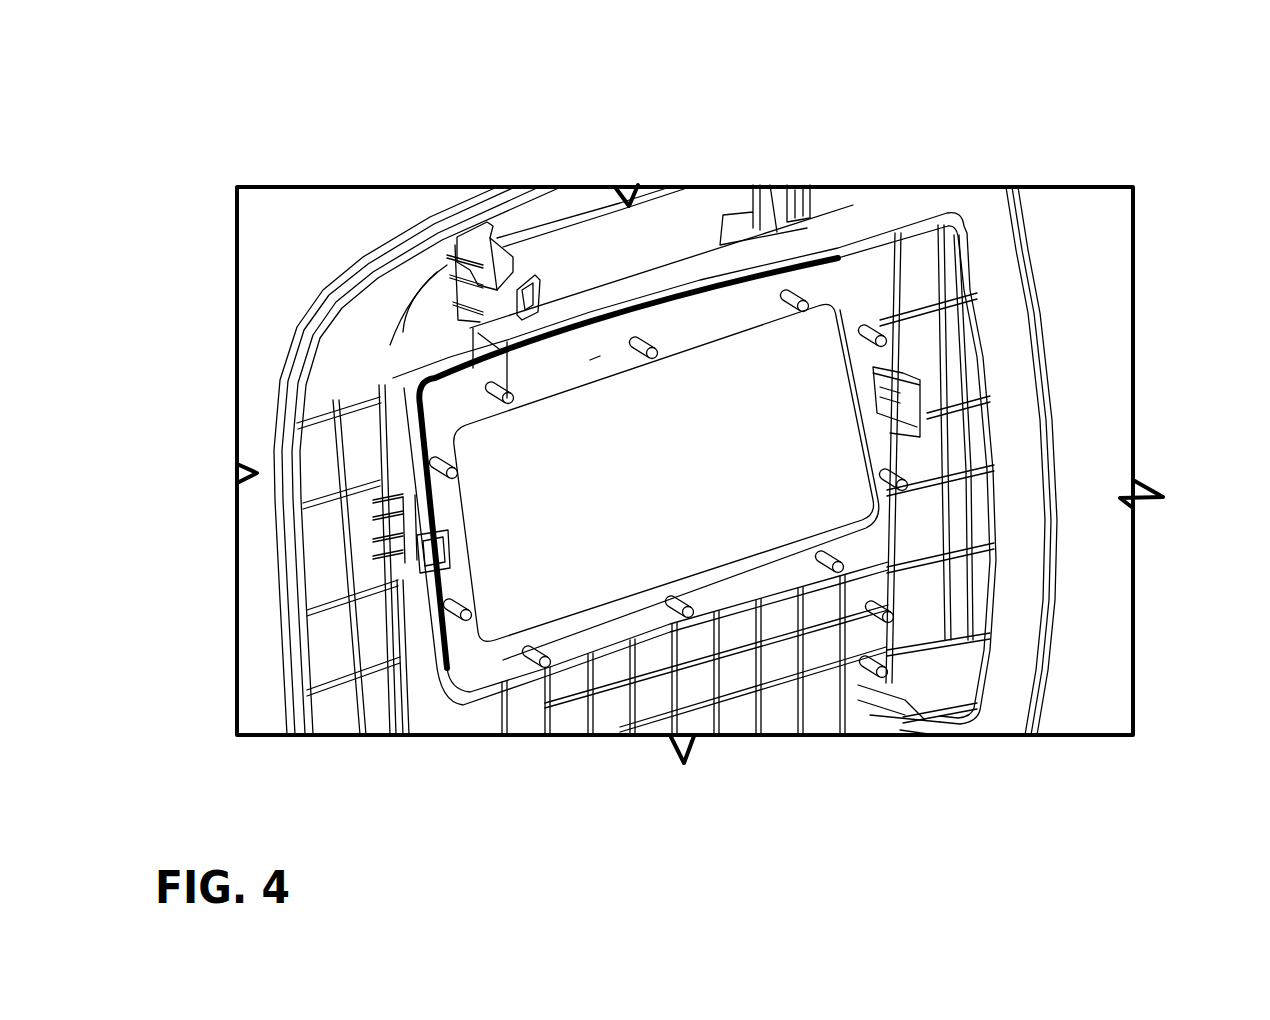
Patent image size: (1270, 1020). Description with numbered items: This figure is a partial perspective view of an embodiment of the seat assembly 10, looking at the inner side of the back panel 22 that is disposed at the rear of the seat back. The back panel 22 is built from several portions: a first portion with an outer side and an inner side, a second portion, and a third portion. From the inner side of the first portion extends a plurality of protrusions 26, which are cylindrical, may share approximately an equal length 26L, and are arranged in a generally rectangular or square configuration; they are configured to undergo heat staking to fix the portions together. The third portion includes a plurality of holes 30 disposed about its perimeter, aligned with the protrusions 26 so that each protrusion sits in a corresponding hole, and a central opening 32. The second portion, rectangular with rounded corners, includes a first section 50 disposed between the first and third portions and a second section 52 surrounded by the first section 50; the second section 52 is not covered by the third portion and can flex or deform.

The seat assembly 10 is at (222, 150).
The back panel 22 is at (312, 272).
The protrusions 26 is at (903, 478).
The length 26L is at (445, 305).
The holes 30 is at (672, 604).
The opening 32 is at (745, 572).
The first section 50 is at (437, 382).
The second section 52 is at (587, 480).